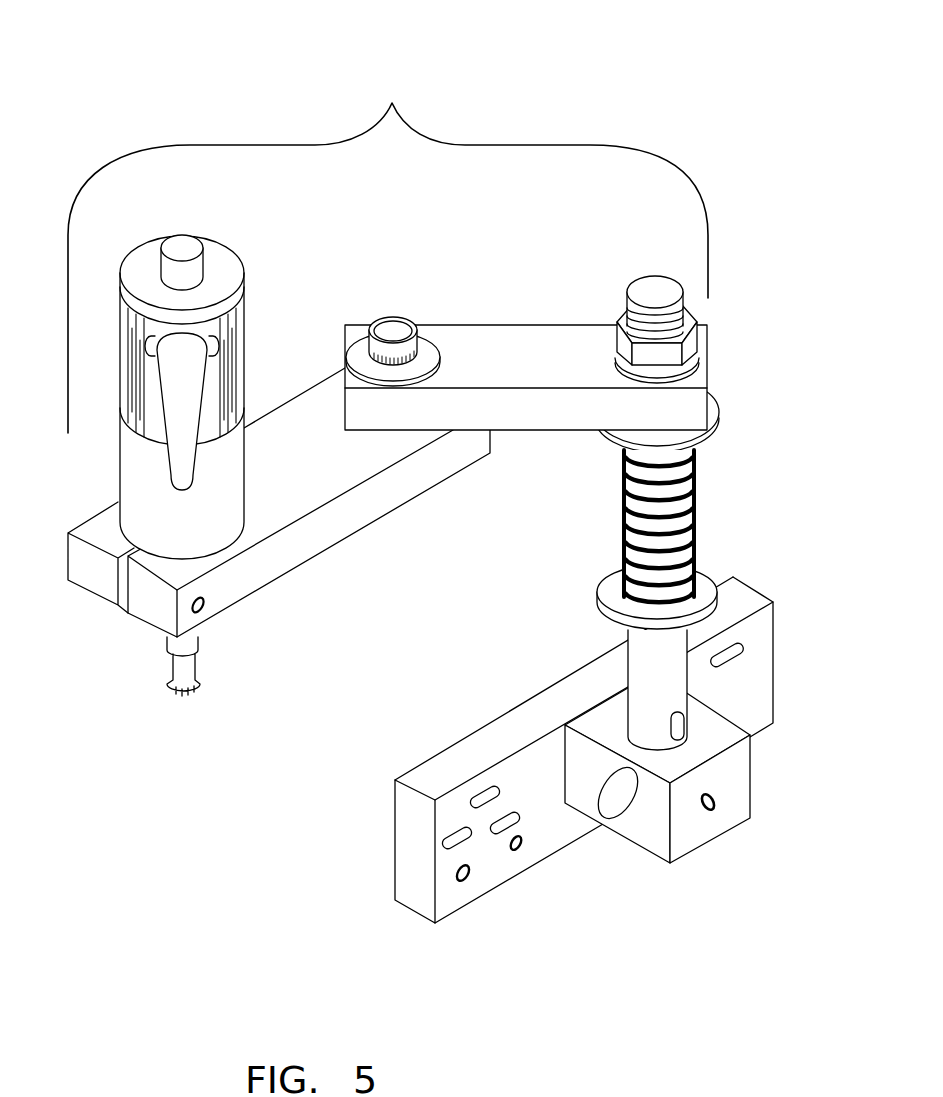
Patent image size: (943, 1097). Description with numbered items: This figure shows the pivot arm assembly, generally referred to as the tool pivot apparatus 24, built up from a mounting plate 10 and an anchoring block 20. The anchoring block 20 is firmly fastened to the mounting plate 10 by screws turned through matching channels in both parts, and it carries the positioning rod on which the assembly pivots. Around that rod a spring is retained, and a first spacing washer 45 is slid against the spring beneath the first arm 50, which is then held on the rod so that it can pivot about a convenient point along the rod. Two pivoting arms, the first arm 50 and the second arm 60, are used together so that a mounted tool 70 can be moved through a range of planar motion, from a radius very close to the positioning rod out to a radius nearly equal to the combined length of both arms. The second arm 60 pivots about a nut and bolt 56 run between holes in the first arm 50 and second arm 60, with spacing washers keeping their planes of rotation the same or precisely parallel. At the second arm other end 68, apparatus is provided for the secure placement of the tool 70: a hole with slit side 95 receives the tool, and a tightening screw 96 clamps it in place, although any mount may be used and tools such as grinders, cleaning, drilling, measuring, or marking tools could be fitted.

The mounting plate 10 is at (503, 885).
The anchoring block 20 is at (647, 851).
The tool pivot apparatus 24 is at (388, 255).
The first spacing washer 45 is at (719, 418).
The first arm 50 is at (528, 325).
The bolt 56 is at (395, 318).
The second arm 60 is at (373, 523).
The second arm other end 68 is at (117, 503).
The mounted tool 70 is at (242, 296).
The hole with slit side 95 is at (117, 606).
The tightening screw 96 is at (204, 609).